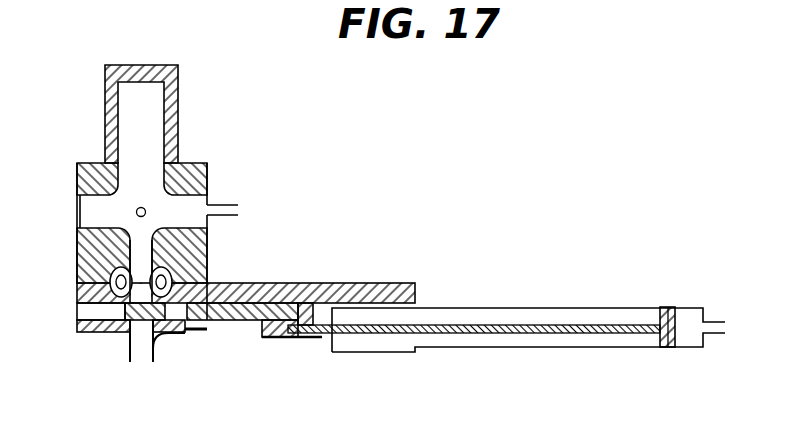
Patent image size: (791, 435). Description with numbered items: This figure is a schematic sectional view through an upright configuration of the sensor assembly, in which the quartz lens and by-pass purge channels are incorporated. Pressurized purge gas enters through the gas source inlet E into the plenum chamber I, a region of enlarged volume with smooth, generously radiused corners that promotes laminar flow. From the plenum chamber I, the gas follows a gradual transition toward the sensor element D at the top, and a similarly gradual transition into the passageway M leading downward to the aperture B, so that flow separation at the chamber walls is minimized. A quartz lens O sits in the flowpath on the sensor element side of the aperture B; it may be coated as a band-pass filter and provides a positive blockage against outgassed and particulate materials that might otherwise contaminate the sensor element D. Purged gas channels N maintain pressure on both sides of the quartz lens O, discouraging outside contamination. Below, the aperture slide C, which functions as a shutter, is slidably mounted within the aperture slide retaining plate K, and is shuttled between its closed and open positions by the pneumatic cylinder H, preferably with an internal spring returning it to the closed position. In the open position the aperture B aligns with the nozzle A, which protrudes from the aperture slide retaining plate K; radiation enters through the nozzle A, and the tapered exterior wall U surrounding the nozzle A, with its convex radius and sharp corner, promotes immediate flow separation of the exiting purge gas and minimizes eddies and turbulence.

The sensor element D is at (174, 100).
The plenum chamber I is at (162, 190).
The gas source inlet E is at (246, 211).
The passageway M is at (140, 247).
The purged gas channels N is at (107, 297).
The quartz lens O is at (175, 285).
The aperture slide C is at (252, 292).
The pneumatic cylinder H is at (630, 307).
The tapered exterior wall U is at (130, 342).
The nozzle A is at (142, 358).
The aperture B is at (176, 320).
The aperture slide retaining plate K is at (207, 322).